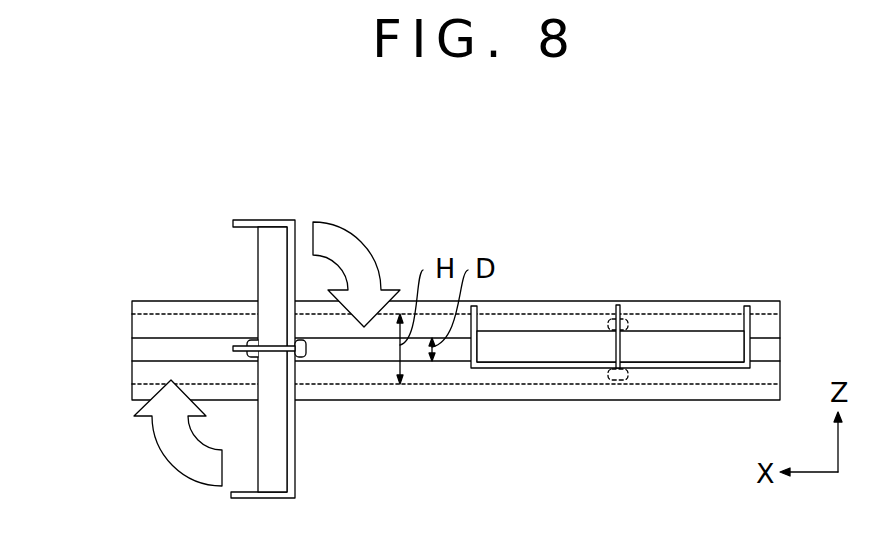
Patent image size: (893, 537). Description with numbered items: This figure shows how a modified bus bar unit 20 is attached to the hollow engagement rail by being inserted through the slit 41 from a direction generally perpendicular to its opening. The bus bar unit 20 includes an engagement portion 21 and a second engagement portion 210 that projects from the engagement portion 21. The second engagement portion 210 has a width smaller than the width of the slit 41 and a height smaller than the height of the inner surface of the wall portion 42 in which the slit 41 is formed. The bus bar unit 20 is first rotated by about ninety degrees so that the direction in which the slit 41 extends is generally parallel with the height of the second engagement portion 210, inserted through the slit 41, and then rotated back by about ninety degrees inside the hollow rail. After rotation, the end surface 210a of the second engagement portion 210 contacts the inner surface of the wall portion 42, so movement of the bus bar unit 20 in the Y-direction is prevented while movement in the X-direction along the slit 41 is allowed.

The bus bar unit 20 is at (272, 221).
The engagement portion 21 is at (268, 252).
The second engagement portion 210 is at (252, 344).
The end surface 210a is at (258, 358).
The slit 41 is at (140, 344).
The wall portion 42 is at (140, 316).